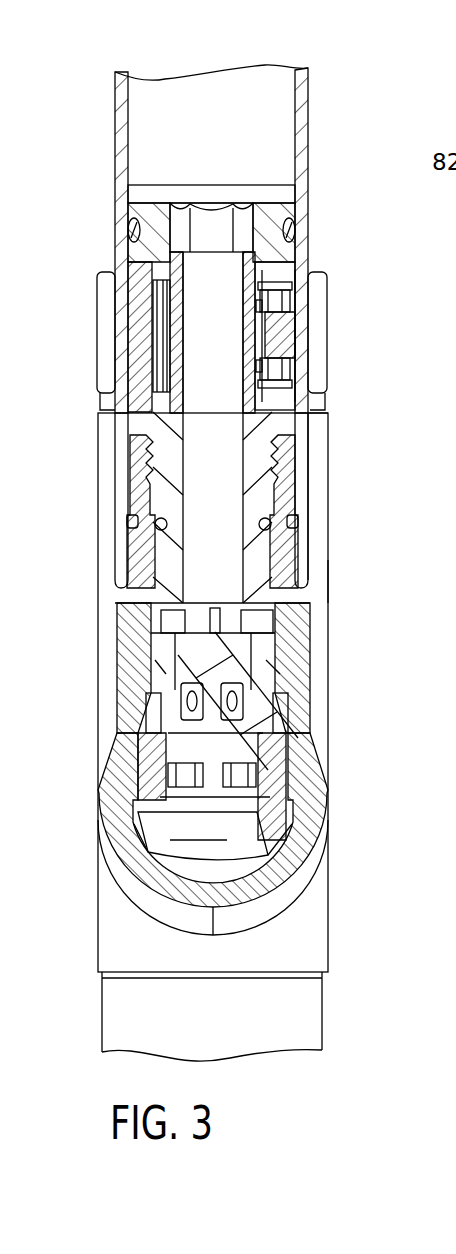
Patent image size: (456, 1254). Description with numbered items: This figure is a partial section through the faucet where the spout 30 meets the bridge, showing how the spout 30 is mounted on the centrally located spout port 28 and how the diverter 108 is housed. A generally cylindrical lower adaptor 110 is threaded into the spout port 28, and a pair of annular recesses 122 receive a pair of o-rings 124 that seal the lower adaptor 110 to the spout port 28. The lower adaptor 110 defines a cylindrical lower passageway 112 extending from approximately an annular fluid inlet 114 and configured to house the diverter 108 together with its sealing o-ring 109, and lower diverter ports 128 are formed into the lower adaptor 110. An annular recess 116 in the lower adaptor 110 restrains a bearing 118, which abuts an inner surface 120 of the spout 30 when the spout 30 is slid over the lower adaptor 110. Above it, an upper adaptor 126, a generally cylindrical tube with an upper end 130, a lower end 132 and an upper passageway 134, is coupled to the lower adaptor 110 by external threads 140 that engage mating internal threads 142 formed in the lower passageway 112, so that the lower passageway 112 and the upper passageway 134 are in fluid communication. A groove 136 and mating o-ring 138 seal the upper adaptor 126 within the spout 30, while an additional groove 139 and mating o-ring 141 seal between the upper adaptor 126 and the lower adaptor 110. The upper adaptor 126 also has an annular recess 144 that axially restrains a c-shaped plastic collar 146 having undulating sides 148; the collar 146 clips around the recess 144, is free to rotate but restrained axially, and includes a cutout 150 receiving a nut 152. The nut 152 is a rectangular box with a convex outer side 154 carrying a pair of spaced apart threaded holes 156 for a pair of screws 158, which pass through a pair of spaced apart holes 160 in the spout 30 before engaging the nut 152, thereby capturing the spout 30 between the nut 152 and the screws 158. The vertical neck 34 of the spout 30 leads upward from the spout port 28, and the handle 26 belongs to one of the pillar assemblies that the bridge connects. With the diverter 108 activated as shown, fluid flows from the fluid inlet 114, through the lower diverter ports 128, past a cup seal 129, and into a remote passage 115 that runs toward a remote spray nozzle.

The spout 30 is at (112, 86).
The vertical neck 34 is at (310, 142).
The upper adaptor 126 is at (278, 198).
The upper end 130 is at (150, 202).
The groove 136 is at (128, 226).
The o-ring 138 is at (128, 228).
The upper passageway 134 is at (232, 433).
The lower end 132 is at (195, 604).
The annular recess 144 is at (148, 270).
The undulating sides 148 is at (108, 305).
The handle 26 is at (334, 313).
The c-shaped plastic collar 146 is at (300, 272).
The cutout 150 is at (297, 282).
The screws 158 is at (300, 302).
The convex outer side 154 is at (300, 344).
The threaded holes 156 is at (262, 288).
The external threads 140 is at (330, 445).
The holes 160 is at (258, 312).
The nut 152 is at (262, 350).
The lower adaptor 110 is at (302, 470).
The inner surface 120 is at (130, 456).
The internal threads 142 is at (156, 457).
The groove 139 is at (166, 522).
The o-ring 141 is at (128, 518).
The annular recess 116 is at (292, 514).
The bearing 118 is at (302, 542).
The spout port 28 is at (300, 587).
The lower passageway 112 is at (150, 603).
The o-rings 124 is at (130, 672).
The sealing o-ring 109 is at (302, 640).
The annular fluid inlet 114 is at (124, 742).
The diverter 108 is at (224, 622).
The annular recesses 122 is at (300, 692).
The lower diverter ports 128 is at (140, 713).
The remote passage 115 is at (194, 838).
The cup seal 129 is at (250, 800).